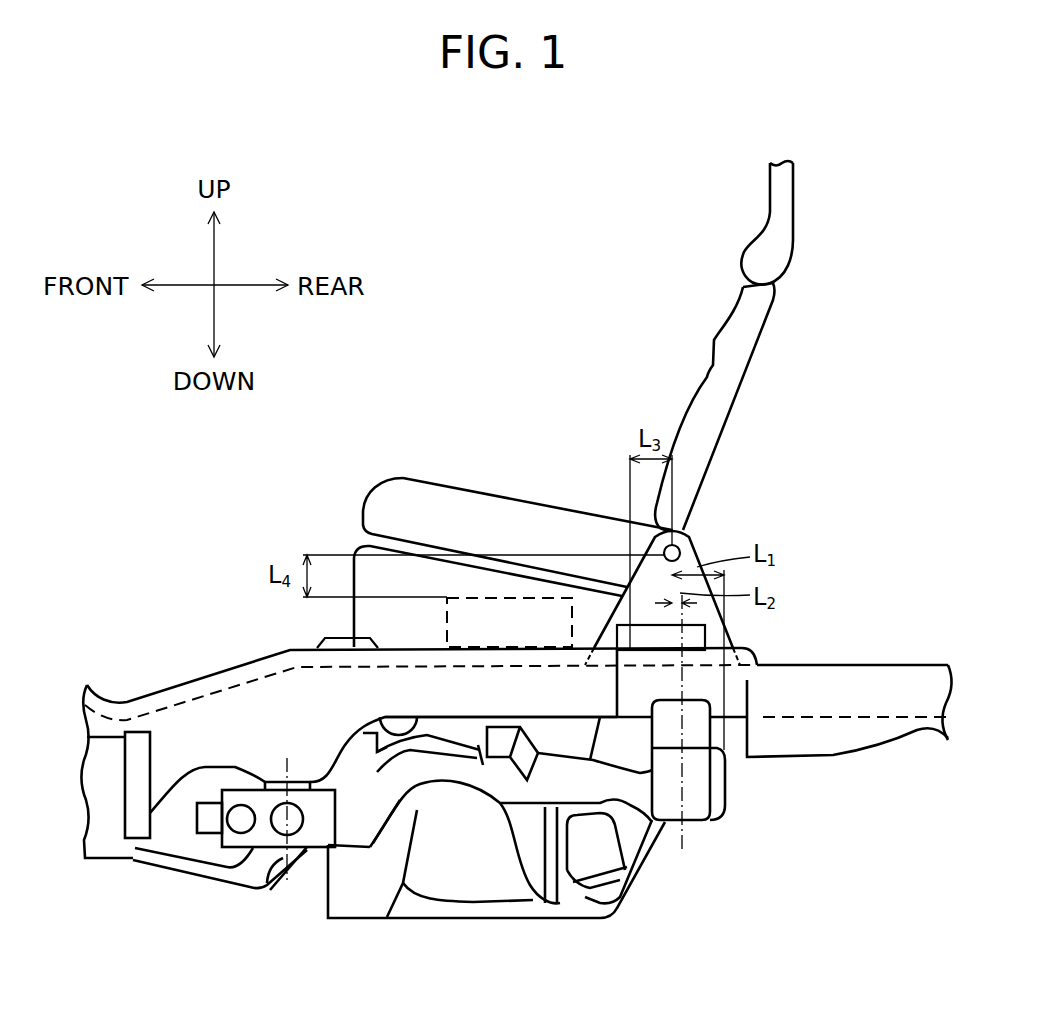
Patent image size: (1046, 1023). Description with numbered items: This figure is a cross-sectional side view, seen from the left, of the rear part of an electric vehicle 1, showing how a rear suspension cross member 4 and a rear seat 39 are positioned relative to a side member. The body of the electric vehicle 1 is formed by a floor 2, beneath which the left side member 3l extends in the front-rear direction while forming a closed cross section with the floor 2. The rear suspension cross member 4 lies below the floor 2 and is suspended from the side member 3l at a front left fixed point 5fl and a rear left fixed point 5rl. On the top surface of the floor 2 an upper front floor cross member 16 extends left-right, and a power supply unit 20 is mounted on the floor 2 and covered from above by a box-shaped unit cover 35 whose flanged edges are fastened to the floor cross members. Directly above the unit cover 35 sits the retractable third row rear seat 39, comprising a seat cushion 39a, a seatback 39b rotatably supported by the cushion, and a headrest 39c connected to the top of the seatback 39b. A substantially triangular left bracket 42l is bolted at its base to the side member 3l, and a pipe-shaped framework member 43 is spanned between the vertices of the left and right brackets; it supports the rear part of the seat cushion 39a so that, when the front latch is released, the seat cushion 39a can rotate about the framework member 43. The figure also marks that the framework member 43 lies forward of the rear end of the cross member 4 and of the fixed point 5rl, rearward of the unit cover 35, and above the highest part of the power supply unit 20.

The electric vehicle 1 is at (447, 315).
The floor 2 is at (188, 702).
The left side member 3l is at (373, 727).
The rear suspension cross member 4 is at (630, 878).
The front left support mount (fixed point) 5fl is at (270, 893).
The rear left support mount (fixed point) 5rl is at (682, 842).
The upper front floor cross member 16 is at (360, 637).
The power supply unit 20 is at (498, 597).
The unit cover 35 is at (452, 555).
The rear seat (retractable third row seat) 39 is at (620, 374).
The seat cushion 39a is at (547, 503).
The seatback 39b is at (743, 397).
The headrest 39c is at (795, 203).
The left bracket 42l is at (708, 617).
The framework member 43 is at (685, 537).